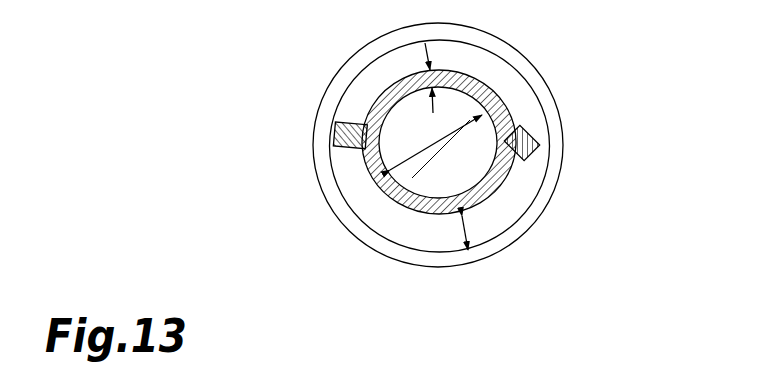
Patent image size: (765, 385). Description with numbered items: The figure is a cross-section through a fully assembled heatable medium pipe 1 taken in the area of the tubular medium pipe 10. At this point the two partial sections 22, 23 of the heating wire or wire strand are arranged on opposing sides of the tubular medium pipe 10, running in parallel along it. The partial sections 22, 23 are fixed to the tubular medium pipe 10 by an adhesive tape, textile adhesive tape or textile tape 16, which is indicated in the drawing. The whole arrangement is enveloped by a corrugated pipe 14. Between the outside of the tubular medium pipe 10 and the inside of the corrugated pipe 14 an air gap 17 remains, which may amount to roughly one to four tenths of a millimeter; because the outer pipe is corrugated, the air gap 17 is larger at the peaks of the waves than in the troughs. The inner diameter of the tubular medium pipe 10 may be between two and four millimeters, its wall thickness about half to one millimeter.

The heatable medium pipe 1 is at (306, 56).
The tubular medium pipe 10 is at (377, 183).
The corrugated pipe 14 is at (313, 171).
The textile tape 16 is at (350, 133).
The air gap 17 is at (372, 221).
The partial section of wire or wire strand 22 is at (338, 138).
The partial section of wire or wire strand 23 is at (540, 147).